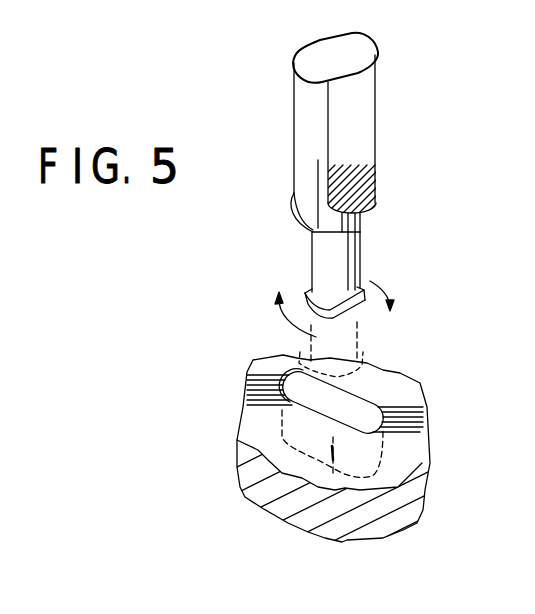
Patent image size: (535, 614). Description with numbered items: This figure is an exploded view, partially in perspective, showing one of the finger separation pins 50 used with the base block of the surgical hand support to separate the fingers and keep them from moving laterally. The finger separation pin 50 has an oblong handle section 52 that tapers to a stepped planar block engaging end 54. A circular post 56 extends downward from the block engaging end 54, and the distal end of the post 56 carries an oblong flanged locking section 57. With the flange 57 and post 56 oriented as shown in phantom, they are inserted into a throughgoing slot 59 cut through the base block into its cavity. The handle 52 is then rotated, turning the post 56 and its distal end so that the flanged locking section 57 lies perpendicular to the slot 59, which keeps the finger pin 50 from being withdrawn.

The finger separation pin 50 is at (357, 48).
The oblong handle section 52 is at (355, 122).
The stepped planar block engaging end 54 is at (360, 223).
The circular post 56 is at (343, 263).
The oblong flanged locking section 57 is at (360, 313).
The throughgoing slot 59 is at (353, 410).